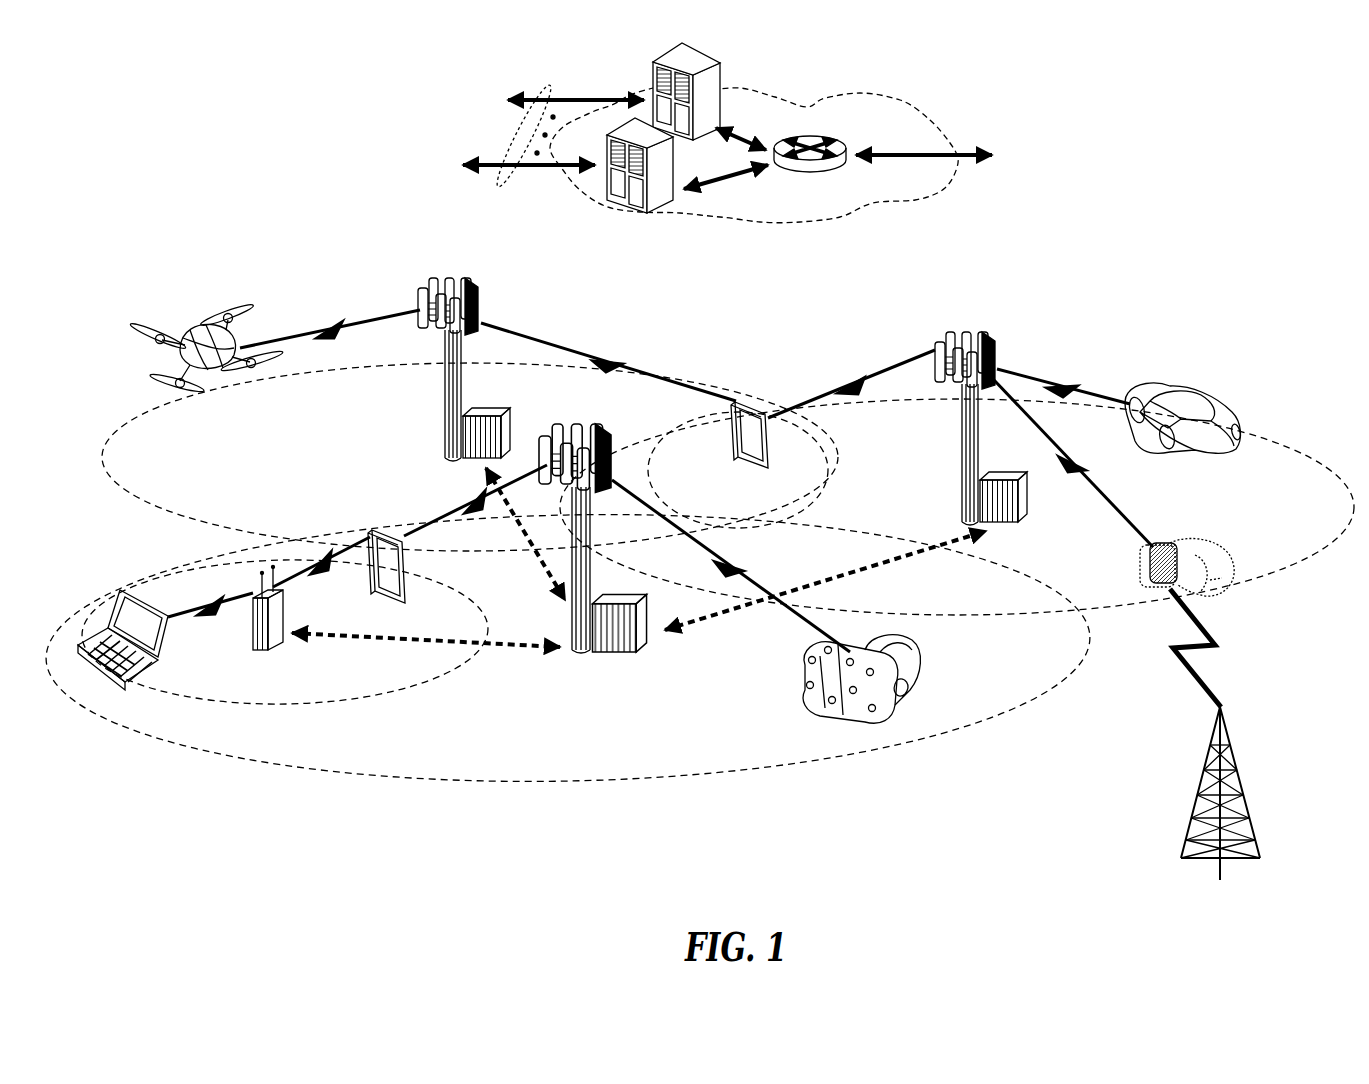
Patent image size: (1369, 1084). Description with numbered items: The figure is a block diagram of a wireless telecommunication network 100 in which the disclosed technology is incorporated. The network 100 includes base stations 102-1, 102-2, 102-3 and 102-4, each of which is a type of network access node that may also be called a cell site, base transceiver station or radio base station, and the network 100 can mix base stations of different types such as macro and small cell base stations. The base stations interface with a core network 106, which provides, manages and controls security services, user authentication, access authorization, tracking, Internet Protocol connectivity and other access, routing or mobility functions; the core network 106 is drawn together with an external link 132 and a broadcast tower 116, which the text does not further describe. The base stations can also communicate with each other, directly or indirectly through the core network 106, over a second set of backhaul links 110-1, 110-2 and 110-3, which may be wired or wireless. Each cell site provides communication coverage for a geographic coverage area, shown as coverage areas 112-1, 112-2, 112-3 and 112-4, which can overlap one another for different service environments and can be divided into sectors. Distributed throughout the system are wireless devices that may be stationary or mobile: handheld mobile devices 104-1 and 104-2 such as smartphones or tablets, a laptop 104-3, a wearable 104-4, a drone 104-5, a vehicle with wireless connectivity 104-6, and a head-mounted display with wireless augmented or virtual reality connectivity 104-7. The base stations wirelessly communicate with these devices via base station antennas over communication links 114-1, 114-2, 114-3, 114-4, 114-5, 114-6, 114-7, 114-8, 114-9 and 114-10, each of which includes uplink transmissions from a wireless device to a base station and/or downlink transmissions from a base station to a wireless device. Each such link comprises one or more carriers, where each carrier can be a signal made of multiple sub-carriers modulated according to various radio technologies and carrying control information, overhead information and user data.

The wireless telecommunication network 100 is at (1254, 144).
The core network 106 is at (852, 222).
The external network link 132 is at (520, 174).
The base station 102-1 is at (576, 658).
The base station 102-2 is at (443, 412).
The base station 102-3 is at (962, 455).
The base station 102-4 is at (258, 641).
The handheld mobile device 104-1 is at (406, 581).
The handheld mobile device 104-2 is at (735, 440).
The laptop 104-3 is at (100, 681).
The wearable 104-4 is at (1170, 546).
The drone 104-5 is at (222, 378).
The vehicle with wireless connectivity 104-6 is at (1210, 392).
The head-mounted display with wireless AR/VR connectivity 104-7 is at (908, 665).
The backhaul link 110-1 is at (330, 641).
The backhaul link 110-2 is at (888, 569).
The backhaul link 110-3 is at (536, 566).
The geographic coverage area 112-1 is at (510, 779).
The geographic coverage area 112-2 is at (385, 700).
The geographic coverage area 112-3 is at (163, 513).
The geographic coverage area 112-4 is at (1272, 445).
The communication link 114-1 is at (742, 567).
The communication link 114-2 is at (472, 508).
The communication link 114-3 is at (214, 613).
The communication link 114-4 is at (325, 580).
The communication link 114-5 is at (334, 328).
The communication link 114-6 is at (614, 364).
The communication link 114-7 is at (852, 383).
The communication link 114-8 is at (1084, 484).
The communication link 114-9 is at (1058, 377).
The wireless communication link 114-10 is at (1210, 646).
The broadcast / radio tower 116 is at (1240, 769).